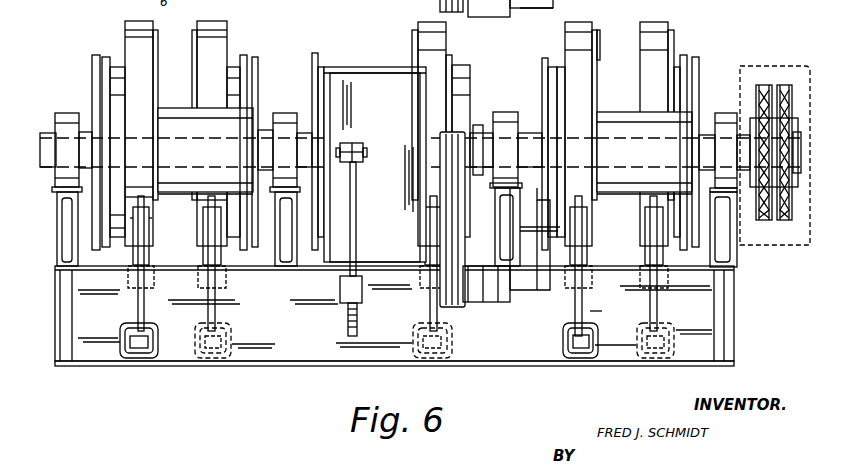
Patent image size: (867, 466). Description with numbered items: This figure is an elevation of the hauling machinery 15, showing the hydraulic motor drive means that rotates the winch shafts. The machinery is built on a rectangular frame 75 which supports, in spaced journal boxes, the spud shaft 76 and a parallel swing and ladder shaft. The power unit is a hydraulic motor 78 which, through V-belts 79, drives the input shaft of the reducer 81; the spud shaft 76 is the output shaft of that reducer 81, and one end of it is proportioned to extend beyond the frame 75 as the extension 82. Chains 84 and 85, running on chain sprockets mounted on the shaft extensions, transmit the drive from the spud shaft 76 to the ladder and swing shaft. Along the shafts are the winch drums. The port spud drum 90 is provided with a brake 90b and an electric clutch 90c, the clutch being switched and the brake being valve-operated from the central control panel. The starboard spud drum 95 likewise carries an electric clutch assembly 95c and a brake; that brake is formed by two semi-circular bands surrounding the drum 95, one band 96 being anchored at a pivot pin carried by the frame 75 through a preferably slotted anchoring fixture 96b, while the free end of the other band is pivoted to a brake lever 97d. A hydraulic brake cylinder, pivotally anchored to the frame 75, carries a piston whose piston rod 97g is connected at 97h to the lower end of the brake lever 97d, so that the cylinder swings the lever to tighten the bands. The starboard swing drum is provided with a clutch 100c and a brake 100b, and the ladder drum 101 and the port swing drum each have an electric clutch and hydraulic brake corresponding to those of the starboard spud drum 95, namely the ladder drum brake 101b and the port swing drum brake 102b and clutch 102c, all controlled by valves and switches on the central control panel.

The hauling machinery 15 is at (257, 367).
The rectangular frame 75 is at (320, 340).
The spud shaft 76 is at (392, 168).
The hydraulic motor 78 is at (528, 290).
The V-belts 79 is at (462, 225).
The reducer 81 is at (369, 80).
The spud shaft extension 82 is at (745, 125).
The chain 84 is at (762, 222).
The chain 85 is at (787, 222).
The port spud drum 90 is at (182, 117).
The brake 90b is at (123, 33).
The electric clutch 90c is at (97, 79).
The starboard spud drum 95 is at (620, 111).
The electric clutch assembly 95c is at (540, 70).
The semi-circular band 96 is at (570, 50).
The anchoring fixture 96b is at (593, 22).
The brake lever 97d is at (588, 300).
The piston rod 97g is at (584, 343).
The connection 97h is at (562, 340).
The brake 100b is at (672, 25).
The clutch 100c is at (687, 55).
The ladder drum 101 is at (317, 62).
The ladder drum brake 101b is at (408, 34).
The port swing drum brake 102b is at (229, 33).
The port swing drum electric clutch 102c is at (245, 56).